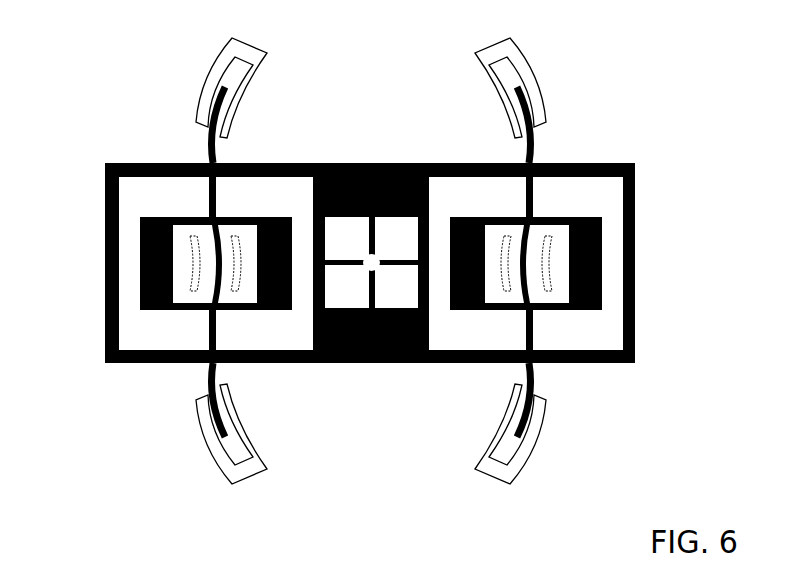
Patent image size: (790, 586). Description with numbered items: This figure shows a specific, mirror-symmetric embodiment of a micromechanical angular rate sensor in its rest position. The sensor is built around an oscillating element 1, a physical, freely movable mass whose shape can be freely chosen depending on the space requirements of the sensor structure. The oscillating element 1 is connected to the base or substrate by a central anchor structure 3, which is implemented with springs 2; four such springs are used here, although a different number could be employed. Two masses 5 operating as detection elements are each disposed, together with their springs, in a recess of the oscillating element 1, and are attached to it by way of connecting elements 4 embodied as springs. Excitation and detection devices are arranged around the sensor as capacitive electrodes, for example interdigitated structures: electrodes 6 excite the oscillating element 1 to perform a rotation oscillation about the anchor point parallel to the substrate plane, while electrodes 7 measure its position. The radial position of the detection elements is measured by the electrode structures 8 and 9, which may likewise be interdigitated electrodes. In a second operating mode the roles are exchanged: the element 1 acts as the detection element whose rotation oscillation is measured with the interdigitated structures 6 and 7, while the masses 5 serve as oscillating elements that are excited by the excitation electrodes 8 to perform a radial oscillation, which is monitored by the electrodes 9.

The oscillating element 1 is at (104, 312).
The springs 2 is at (370, 297).
The central anchor structure 3 is at (381, 258).
The connecting elements 4 is at (534, 204).
The masses 5 is at (138, 228).
The excitation electrodes 6 is at (208, 80).
The position-measuring electrodes 7 is at (525, 60).
The excitation electrodes 8 is at (500, 296).
The electrodes 9 is at (553, 297).